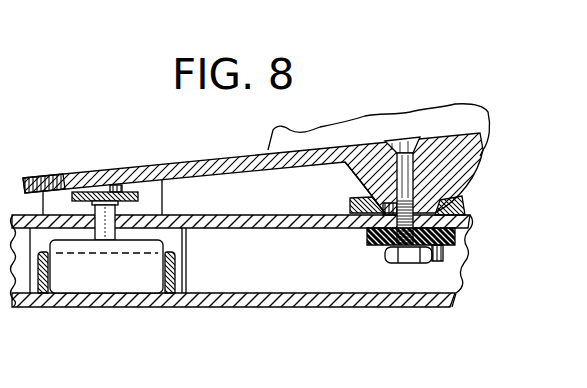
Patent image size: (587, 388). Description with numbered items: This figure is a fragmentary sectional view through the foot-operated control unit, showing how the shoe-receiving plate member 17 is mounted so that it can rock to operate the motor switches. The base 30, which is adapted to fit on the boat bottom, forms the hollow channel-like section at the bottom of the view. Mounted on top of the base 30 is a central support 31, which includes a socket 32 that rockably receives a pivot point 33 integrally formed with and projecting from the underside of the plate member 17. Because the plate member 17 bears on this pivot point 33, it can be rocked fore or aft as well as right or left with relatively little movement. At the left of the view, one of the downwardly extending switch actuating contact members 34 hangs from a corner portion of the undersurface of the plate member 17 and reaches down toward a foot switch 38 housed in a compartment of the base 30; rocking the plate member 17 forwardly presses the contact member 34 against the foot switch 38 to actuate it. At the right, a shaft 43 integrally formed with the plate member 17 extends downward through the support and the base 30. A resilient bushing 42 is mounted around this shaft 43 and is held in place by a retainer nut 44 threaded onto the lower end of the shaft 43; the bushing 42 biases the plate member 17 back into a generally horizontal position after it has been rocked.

The plate member 17 is at (212, 168).
The base 30 is at (272, 296).
The central support 31 is at (268, 215).
The socket 32 is at (440, 210).
The pivot point 33 is at (343, 183).
The switch actuating contact member 34 is at (93, 202).
The foot switch 38 is at (83, 282).
The resilient bushing 42 is at (370, 240).
The shaft 43 is at (400, 153).
The retainer nut 44 is at (390, 257).